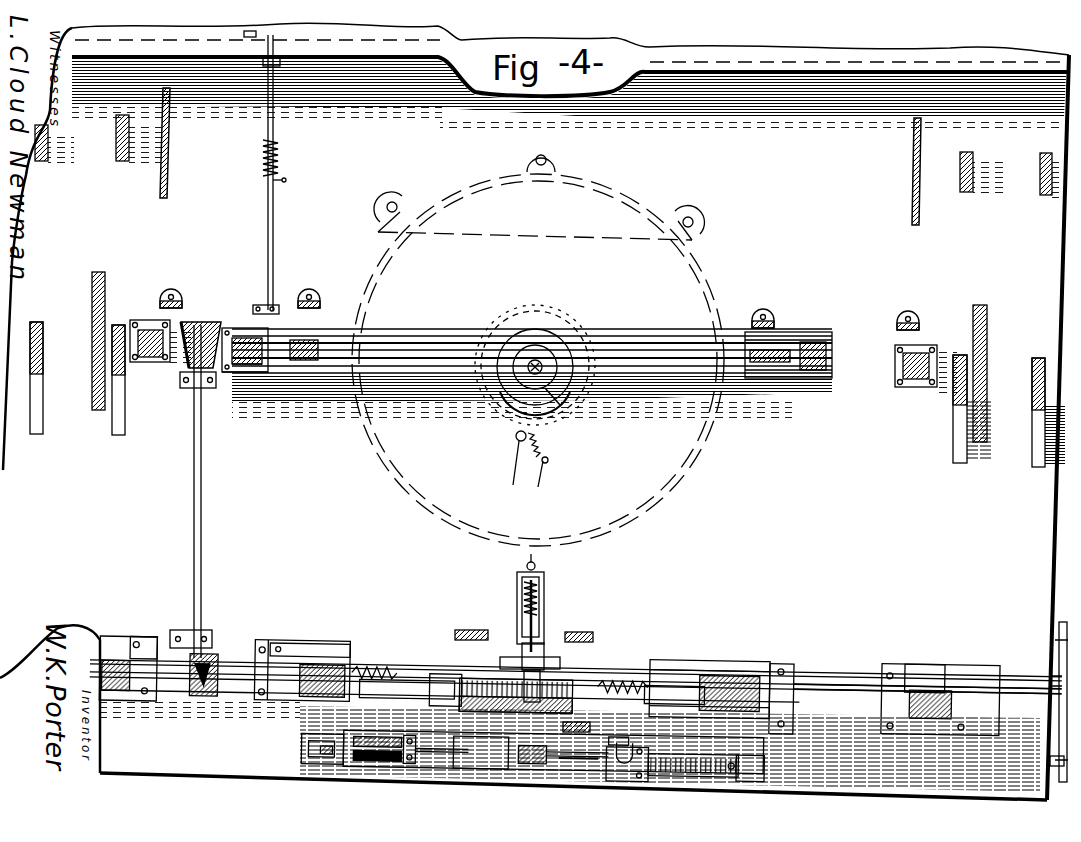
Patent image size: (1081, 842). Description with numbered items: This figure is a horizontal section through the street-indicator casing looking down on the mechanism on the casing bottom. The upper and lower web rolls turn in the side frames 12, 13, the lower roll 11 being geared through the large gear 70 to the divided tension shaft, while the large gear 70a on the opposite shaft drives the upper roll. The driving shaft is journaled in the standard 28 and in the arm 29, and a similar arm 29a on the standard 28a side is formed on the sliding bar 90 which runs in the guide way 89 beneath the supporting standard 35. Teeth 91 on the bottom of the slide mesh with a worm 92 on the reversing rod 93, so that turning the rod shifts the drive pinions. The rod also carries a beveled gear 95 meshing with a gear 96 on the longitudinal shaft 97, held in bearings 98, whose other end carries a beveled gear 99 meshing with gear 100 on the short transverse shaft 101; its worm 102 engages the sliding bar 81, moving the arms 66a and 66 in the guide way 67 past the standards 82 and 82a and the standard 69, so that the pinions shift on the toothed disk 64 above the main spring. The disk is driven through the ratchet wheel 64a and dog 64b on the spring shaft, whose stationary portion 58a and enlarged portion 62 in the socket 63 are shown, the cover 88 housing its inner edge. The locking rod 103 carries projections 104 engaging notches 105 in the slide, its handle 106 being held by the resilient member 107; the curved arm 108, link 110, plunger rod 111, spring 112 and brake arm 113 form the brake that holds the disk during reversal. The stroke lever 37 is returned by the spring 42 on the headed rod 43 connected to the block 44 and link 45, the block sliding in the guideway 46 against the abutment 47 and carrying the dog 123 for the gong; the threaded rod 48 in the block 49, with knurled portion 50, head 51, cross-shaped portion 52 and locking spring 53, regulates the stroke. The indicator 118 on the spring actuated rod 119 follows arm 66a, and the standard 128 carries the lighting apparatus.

The lower flanged web receiving roll 11 is at (168, 128).
The side frame 12 is at (50, 145).
The side frame 13 is at (1040, 158).
The standard 28 is at (110, 655).
The standard 28a is at (952, 690).
The arm 29 is at (308, 658).
The arm 29a is at (796, 668).
The supporting standard 35 is at (472, 630).
The stroke lever 37 is at (532, 756).
The spring 42 is at (738, 762).
The headed rod 43 is at (766, 754).
The sliding guide member or block 44 is at (640, 762).
The link 45 is at (582, 752).
The guideway 46 is at (303, 740).
The abutment 47 is at (700, 762).
The threaded rod 48 is at (420, 746).
The threaded block 49 is at (345, 758).
The knurled portion 50 is at (380, 732).
The stop or head 51 is at (470, 762).
The cross-shaped portion 52 is at (624, 733).
The spring 53 is at (466, 742).
The upper portion of shaft 58a is at (545, 362).
The enlarged portion 62 is at (522, 393).
The socket 63 is at (541, 418).
The disk 64 is at (705, 480).
The ratchet wheel 64a is at (556, 307).
The dog 64b is at (529, 459).
The movable arm 66 is at (833, 353).
The arm 66a is at (146, 330).
The guide way 67 is at (812, 342).
The standard 69 is at (903, 371).
The large gear 70 is at (989, 340).
The large gear 70a is at (92, 390).
The sliding bar 81 is at (398, 352).
The vertically extending standards 82 is at (303, 340).
The standard 82a is at (770, 350).
The cover 88 is at (645, 197).
The guide way 89 is at (745, 665).
The sliding bar 90 is at (700, 665).
The teeth 91 is at (465, 672).
The worm 92 is at (462, 672).
The reversing rod 93 is at (248, 688).
The beveled gear 95 is at (200, 690).
The gear 96 is at (212, 660).
The longitudinal shaft 97 is at (203, 500).
The bearings 98 is at (190, 388).
The beveled gear 99 is at (196, 322).
The gear 100 is at (232, 328).
The short transverse shaft 101 is at (282, 302).
The worm 102 is at (255, 378).
The locking rod 103 is at (840, 672).
The projections 104 is at (380, 662).
The notches 105 is at (395, 672).
The handle 106 is at (1050, 768).
The resilient arc shaped member 107 is at (1058, 647).
The curved arm 108 is at (546, 662).
The link 110 is at (541, 640).
The plunger rod 111 is at (537, 620).
The spring 112 is at (545, 589).
The brake arm 113 is at (533, 560).
The indicator 118 is at (262, 33).
The spring actuated rod 119 is at (276, 123).
The spring actuated dog 123 is at (636, 736).
The standard 128 is at (316, 298).